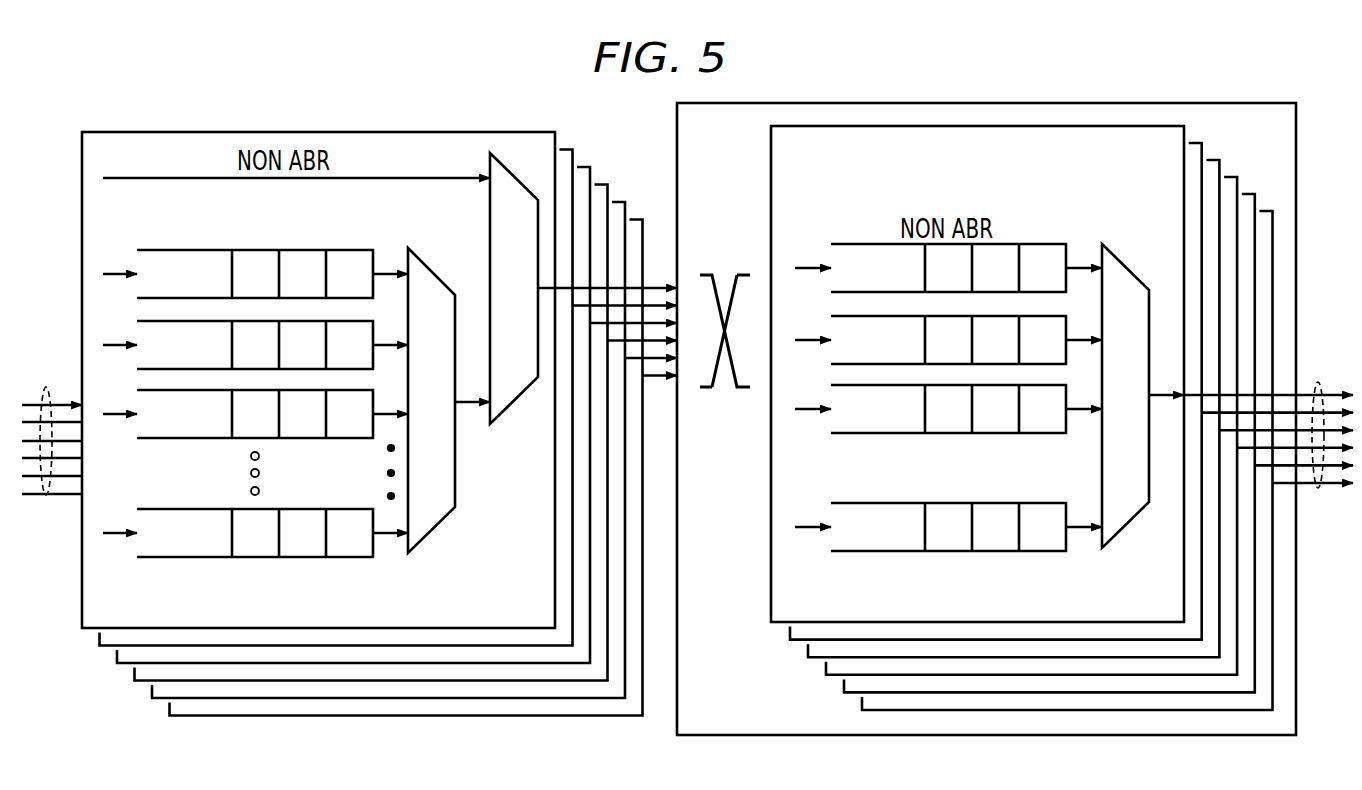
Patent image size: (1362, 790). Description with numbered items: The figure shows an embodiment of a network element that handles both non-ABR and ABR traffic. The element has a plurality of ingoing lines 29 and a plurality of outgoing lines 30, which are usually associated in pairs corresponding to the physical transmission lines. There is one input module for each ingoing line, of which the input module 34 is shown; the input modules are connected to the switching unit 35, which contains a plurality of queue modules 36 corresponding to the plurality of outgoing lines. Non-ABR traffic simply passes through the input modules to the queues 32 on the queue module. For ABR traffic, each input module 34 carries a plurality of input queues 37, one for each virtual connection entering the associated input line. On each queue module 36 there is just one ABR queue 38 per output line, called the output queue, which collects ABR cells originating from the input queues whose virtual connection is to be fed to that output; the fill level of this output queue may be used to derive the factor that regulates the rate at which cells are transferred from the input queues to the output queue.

The ingoing lines 29 is at (46, 495).
The outgoing lines 30 is at (1318, 488).
The queues for non-ABR traffic 32 is at (993, 434).
The input module 34 is at (315, 131).
The switching unit 35 is at (986, 103).
The queue module 36 is at (771, 472).
The input queues 37 is at (185, 250).
The ABR queue 38 is at (948, 552).